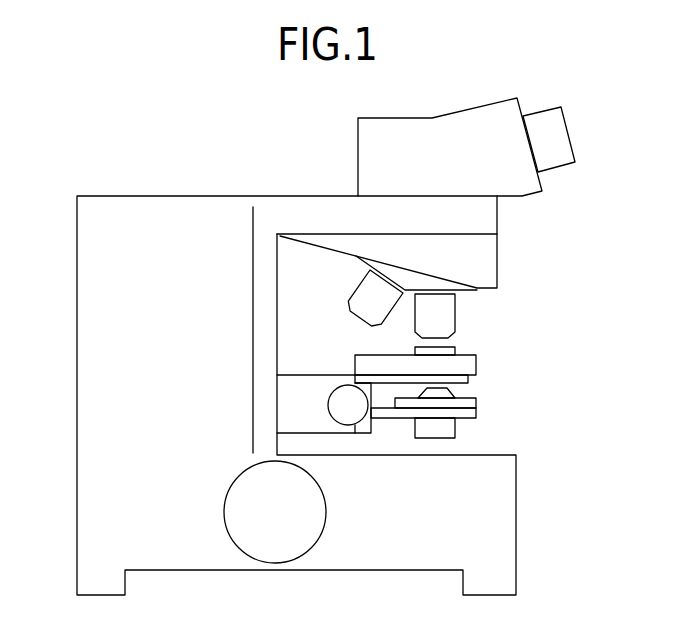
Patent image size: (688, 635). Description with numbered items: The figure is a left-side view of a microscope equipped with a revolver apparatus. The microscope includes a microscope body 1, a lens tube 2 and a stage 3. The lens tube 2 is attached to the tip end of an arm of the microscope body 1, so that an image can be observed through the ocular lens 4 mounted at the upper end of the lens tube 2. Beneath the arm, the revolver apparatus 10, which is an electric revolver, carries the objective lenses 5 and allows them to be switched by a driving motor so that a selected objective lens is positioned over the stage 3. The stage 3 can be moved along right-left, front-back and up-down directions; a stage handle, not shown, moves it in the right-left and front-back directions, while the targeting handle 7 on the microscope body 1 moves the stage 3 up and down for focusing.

The microscope body 1 is at (97, 347).
The lens tube 2 is at (358, 148).
The stage 3 is at (463, 367).
The ocular lens 4 is at (553, 136).
The objective lenses 5 is at (370, 297).
The targeting handle 7 is at (328, 510).
The revolver apparatus 10 is at (500, 258).